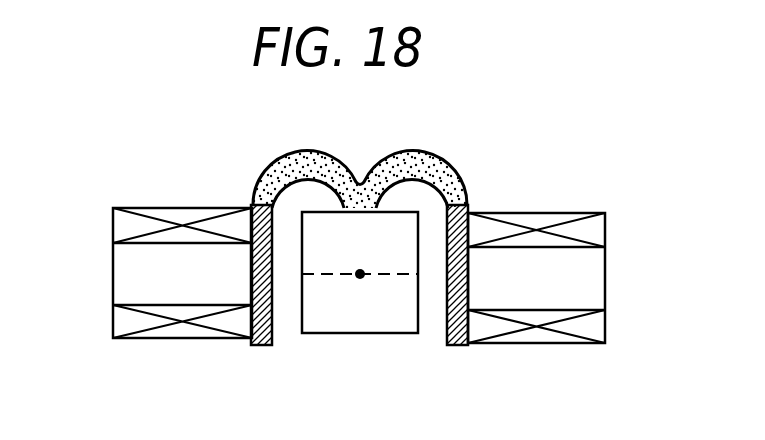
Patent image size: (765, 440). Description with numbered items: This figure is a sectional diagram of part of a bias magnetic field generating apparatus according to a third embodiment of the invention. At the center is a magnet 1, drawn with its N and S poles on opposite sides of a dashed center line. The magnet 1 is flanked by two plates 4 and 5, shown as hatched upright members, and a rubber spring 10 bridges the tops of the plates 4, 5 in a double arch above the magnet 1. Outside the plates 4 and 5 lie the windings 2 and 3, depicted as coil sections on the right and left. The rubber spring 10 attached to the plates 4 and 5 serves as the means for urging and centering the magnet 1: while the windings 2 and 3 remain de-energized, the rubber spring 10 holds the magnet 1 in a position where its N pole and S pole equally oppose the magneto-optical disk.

The magnet 1 is at (360, 322).
The winding 2 is at (597, 285).
The winding 3 is at (120, 275).
The plate 4 is at (457, 347).
The plate 5 is at (265, 346).
The rubber spring 10 is at (452, 167).